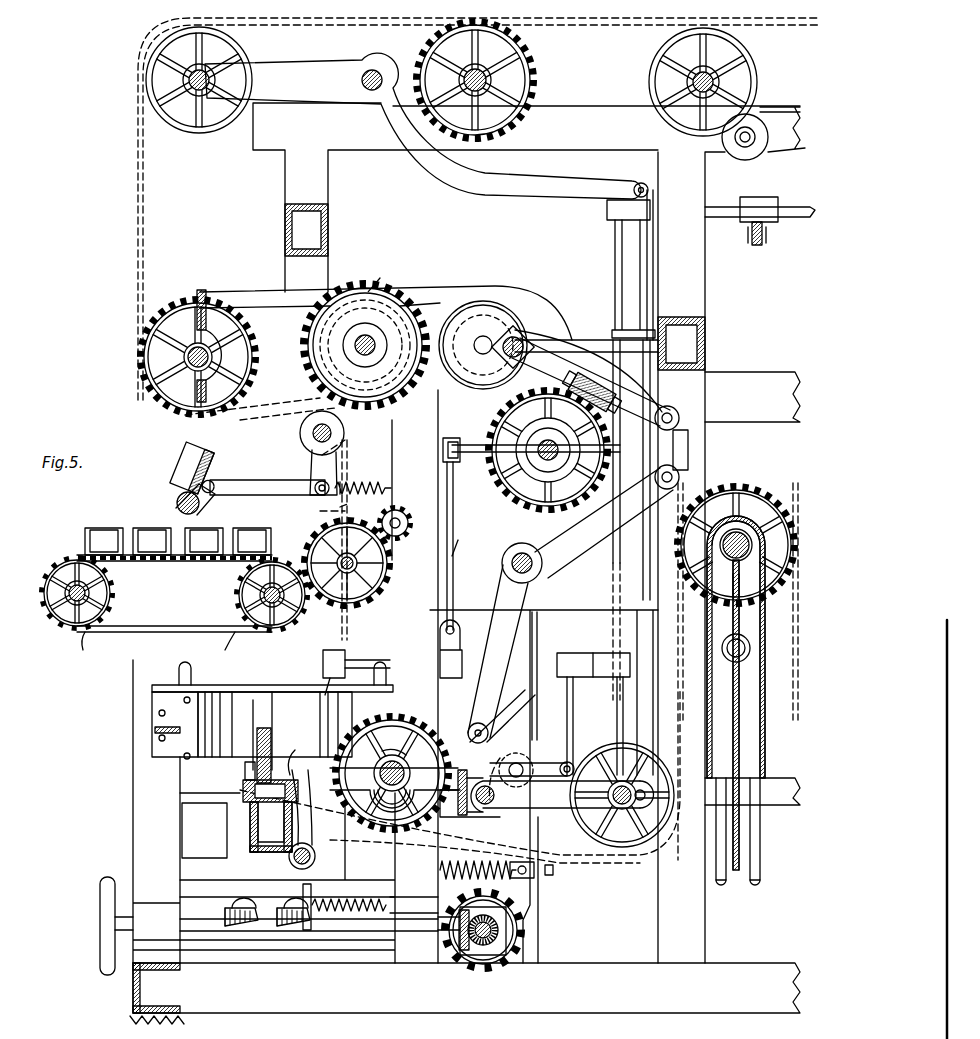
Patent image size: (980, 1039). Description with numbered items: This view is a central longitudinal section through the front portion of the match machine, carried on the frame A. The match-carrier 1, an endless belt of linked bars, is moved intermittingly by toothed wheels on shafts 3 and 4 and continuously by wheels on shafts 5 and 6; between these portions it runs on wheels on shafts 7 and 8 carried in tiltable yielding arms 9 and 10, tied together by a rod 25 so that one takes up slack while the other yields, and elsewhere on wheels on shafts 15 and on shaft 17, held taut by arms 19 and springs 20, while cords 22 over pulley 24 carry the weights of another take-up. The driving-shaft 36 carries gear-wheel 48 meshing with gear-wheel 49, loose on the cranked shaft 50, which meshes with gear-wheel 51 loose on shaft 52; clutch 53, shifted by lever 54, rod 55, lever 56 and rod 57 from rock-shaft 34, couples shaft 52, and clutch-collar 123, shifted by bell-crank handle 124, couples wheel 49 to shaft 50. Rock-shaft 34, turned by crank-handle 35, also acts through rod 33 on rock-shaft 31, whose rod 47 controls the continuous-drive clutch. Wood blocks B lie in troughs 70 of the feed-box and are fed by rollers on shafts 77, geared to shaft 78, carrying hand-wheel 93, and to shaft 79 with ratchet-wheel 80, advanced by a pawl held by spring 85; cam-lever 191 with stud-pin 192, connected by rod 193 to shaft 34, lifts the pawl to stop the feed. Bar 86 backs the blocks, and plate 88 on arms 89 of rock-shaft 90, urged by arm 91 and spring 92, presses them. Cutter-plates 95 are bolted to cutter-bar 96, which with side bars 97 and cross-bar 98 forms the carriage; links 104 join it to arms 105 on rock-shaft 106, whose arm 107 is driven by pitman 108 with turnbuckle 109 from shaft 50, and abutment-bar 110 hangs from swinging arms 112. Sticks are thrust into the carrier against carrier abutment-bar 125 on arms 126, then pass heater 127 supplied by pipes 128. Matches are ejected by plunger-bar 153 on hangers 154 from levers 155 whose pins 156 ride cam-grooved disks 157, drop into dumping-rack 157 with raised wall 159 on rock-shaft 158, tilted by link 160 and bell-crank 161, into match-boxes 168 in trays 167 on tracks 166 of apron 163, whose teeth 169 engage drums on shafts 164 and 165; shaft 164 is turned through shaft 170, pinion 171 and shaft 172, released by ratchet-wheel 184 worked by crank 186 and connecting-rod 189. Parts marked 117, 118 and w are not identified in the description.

The match-carrier 1 is at (797, 646).
The shaft 3 is at (186, 362).
The shaft 4 is at (402, 766).
The shaft 5 is at (487, 75).
The shaft 6 is at (740, 560).
The shaft 7 is at (202, 67).
The shaft 8 is at (624, 810).
The tiltable yielding arm 9 is at (311, 65).
The tiltable yielding arm 10 is at (556, 792).
The shaft 15 is at (716, 77).
The shaft 17 is at (300, 438).
The tiltable arm 19 is at (312, 470).
The spring 20 is at (360, 484).
The cord 22 is at (785, 156).
The pulley 24 is at (748, 160).
The rod 25 is at (637, 704).
The rock-shaft 31 is at (800, 222).
The rod 33 is at (620, 281).
The rock-shaft 34 is at (520, 690).
The crank-handle 35 is at (345, 655).
The driving-shaft 36 is at (372, 350).
The rod 47 is at (765, 243).
The gear-wheel 48 is at (408, 398).
The gear-wheel 49 is at (472, 423).
The cranked shaft 50 is at (474, 345).
The gear-wheel 51 is at (525, 495).
The shaft 52 is at (548, 465).
The clutch 53 is at (610, 490).
The lever 54 is at (472, 464).
The rod 55 is at (443, 451).
The lever 56 is at (454, 582).
The rod 57 is at (456, 632).
The trough 70 is at (242, 860).
The shaft 77 is at (232, 906).
The shaft 78 is at (273, 928).
The shaft 79 is at (482, 950).
The ratchet-wheel 80 is at (520, 946).
The spring 85 is at (440, 878).
The bar 86 is at (243, 790).
The plate 88 is at (302, 756).
The radial arm 89 is at (313, 832).
The rock-shaft 90 is at (289, 857).
The radial arm 91 is at (318, 892).
The spring 92 is at (382, 918).
The hand-wheel 93 is at (100, 895).
The cutter-plate 95 is at (253, 716).
The cutter-bar 96 is at (272, 742).
The side bar 97 is at (275, 724).
The cross-bar 98 is at (175, 725).
The link 104 is at (462, 727).
The radial arm 105 is at (498, 651).
The rock-shaft 106 is at (533, 572).
The radial arm 107 is at (604, 523).
The pitman 108 is at (678, 420).
The turnbuckle 109 is at (595, 395).
The abutment-bar 110 is at (240, 766).
The swinging arm 112 is at (192, 675).
The plate 117 is at (275, 688).
The arm 118 is at (319, 668).
The clutch-collar 123 is at (495, 318).
The bell-crank lever and handle 124 is at (594, 345).
The carrier abutment-bar 125 is at (336, 798).
The arm 126 is at (394, 790).
The heater 127 is at (764, 738).
The pipe 128 is at (730, 880).
The bar 153 is at (190, 412).
The hanger 154 is at (212, 365).
The lever 155 is at (438, 296).
The pin 156 is at (387, 272).
The disk; dumping-rack 157 is at (396, 310).
The rock-shaft 158 is at (177, 505).
The wall 159 is at (200, 455).
The link 160 is at (278, 486).
The bell-crank 161 is at (342, 470).
The endless apron 163 is at (148, 630).
The shaft 164 is at (255, 605).
The shaft 165 is at (96, 585).
The track 166 is at (153, 649).
The tray 167 is at (85, 542).
The match-box 168 is at (148, 540).
The boss 169 is at (176, 555).
The shaft 170 is at (378, 580).
The pinion 171 is at (403, 518).
The shaft 172 is at (400, 530).
The ratchet-wheel 184 is at (325, 511).
The crank 186 is at (475, 544).
The connecting-rod 189 is at (443, 502).
The cam-lever 191 is at (546, 766).
The stud-pin 192 is at (516, 762).
The rod 193 is at (567, 690).
The frame A is at (665, 950).
The wood block B is at (271, 827).
The wire w is at (798, 703).